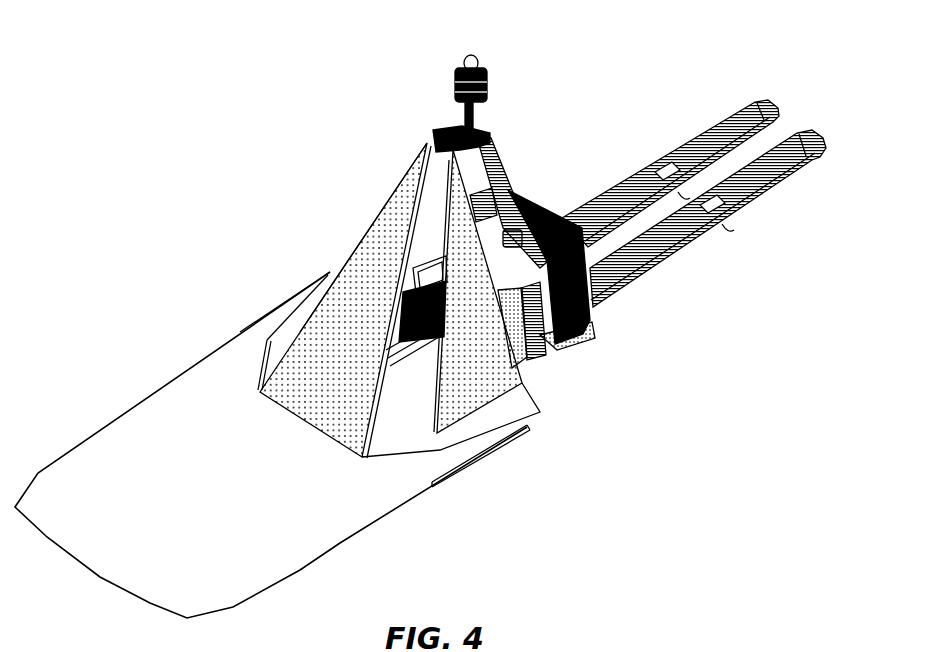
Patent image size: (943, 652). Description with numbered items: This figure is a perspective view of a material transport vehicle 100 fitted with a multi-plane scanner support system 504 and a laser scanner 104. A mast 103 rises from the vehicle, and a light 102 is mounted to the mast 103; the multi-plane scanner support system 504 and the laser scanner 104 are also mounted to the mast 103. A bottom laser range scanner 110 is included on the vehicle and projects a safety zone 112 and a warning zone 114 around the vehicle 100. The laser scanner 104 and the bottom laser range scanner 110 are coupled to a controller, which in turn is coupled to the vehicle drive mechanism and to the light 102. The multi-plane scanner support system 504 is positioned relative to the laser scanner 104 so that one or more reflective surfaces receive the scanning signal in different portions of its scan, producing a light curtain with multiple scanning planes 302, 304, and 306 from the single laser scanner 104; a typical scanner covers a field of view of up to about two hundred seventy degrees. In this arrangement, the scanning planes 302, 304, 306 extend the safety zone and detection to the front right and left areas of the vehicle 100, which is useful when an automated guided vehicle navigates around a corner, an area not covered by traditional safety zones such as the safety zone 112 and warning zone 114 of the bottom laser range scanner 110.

The material transport vehicle 100 is at (420, 322).
The light 102 is at (452, 78).
The mast 103 is at (490, 163).
The laser scanner 104 is at (401, 288).
The multi-plane scanner support system 504 is at (401, 277).
The bottom laser range scanner 110 is at (409, 388).
The safety zone 112 is at (268, 355).
The warning zone 114 is at (132, 503).
The scanning plane 302 is at (347, 391).
The scanning plane 304 is at (382, 207).
The scanning plane 306 is at (465, 397).